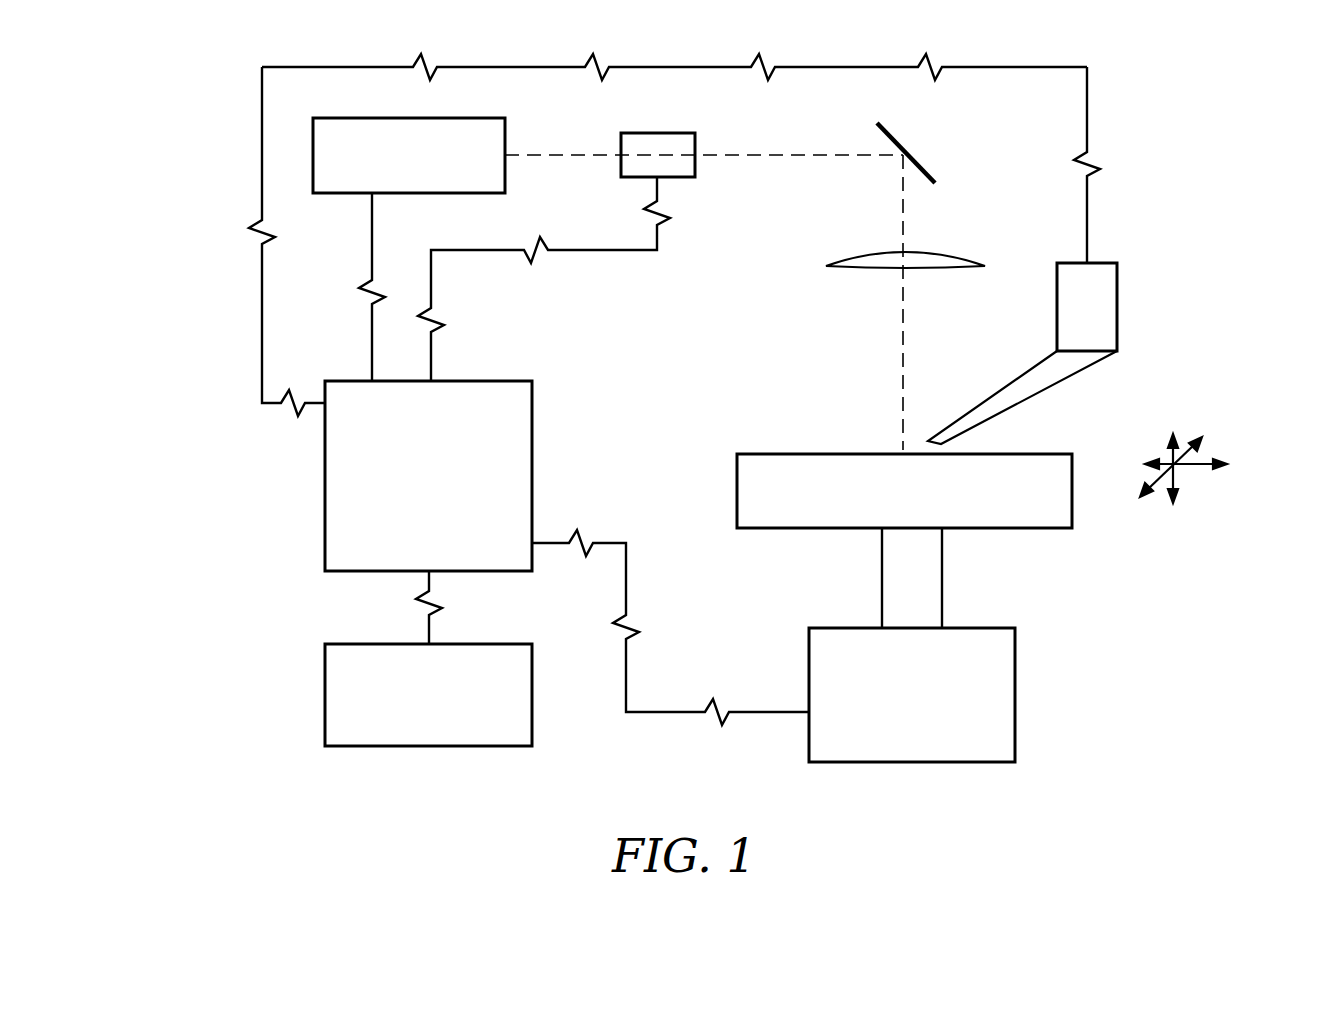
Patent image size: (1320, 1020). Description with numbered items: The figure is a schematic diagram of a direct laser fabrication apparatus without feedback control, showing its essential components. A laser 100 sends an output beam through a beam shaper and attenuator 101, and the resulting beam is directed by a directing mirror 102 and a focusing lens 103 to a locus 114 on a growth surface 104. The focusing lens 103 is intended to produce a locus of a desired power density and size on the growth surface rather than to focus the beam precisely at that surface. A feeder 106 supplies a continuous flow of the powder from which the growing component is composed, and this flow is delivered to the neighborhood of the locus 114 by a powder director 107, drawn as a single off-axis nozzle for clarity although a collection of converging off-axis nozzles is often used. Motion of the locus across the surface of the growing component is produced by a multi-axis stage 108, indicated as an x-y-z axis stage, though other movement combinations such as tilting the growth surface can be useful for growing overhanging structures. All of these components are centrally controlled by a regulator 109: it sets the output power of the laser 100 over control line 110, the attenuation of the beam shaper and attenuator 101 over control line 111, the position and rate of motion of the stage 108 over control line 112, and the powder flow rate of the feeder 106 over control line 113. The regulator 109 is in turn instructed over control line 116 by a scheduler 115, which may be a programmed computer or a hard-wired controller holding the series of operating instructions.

The laser 100 is at (390, 165).
The beam shaper and attenuator 101 is at (630, 142).
The directing mirror 102 is at (888, 132).
The focusing lens 103 is at (884, 255).
The growth surface 104 is at (891, 498).
The feeder 106 is at (1068, 310).
The powder director 107 is at (1024, 376).
The multi-axis stage 108 is at (881, 704).
The regulator 109 is at (398, 486).
The control line 110 is at (371, 214).
The control line 111 is at (627, 253).
The control line 112 is at (638, 712).
The control line 113 is at (1088, 94).
The locus 114 is at (769, 347).
The scheduler 115 is at (398, 704).
The control line 116 is at (426, 581).